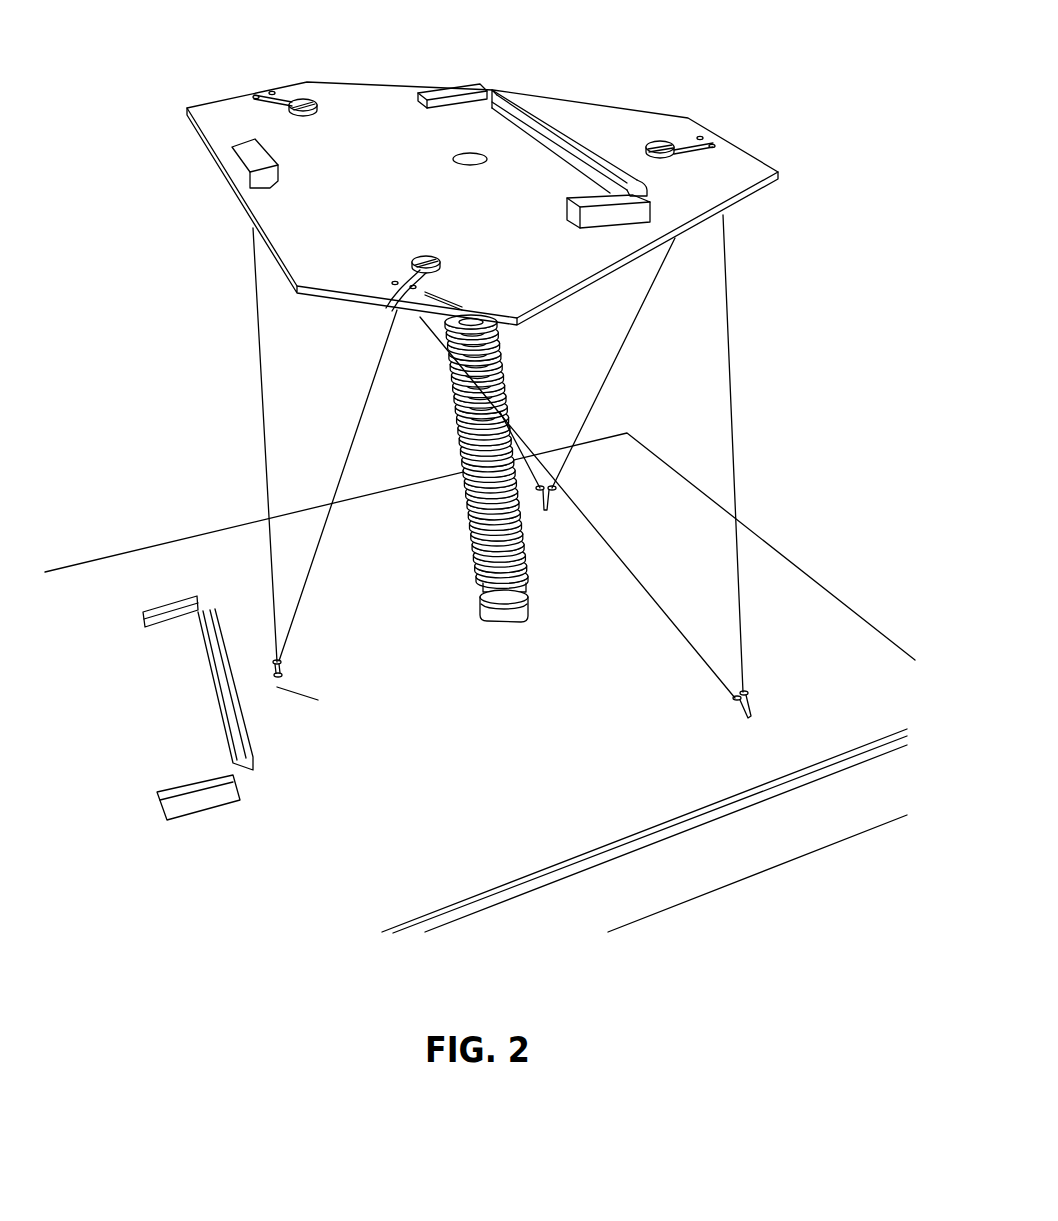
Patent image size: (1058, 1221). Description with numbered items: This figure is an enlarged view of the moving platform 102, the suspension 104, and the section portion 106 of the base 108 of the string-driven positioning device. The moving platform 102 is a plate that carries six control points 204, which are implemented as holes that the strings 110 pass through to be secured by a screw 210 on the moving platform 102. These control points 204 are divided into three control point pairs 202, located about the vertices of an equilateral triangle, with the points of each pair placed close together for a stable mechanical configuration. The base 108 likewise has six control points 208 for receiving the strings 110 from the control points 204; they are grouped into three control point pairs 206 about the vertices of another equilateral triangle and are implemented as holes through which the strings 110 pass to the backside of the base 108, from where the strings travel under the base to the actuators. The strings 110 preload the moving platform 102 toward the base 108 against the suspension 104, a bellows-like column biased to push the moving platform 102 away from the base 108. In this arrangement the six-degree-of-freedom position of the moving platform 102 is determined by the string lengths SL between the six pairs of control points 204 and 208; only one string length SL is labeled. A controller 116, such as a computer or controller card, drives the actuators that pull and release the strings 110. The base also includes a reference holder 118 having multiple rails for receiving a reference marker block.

The moving platform 102 is at (748, 164).
The suspension 104 is at (460, 489).
The section portion of base 106 is at (758, 894).
The base 108 is at (593, 907).
The strings 110 is at (457, 362).
The controller 116 is at (429, 80).
The reference holder 118 is at (252, 808).
The control point pairs 202 is at (239, 82).
The control points 204 is at (271, 91).
The control point pairs 206 is at (532, 594).
The control points 208 is at (276, 660).
The screw 210 is at (305, 98).
The string length SL is at (294, 704).